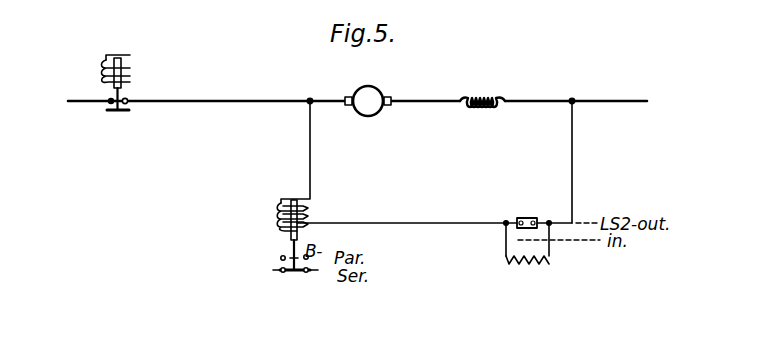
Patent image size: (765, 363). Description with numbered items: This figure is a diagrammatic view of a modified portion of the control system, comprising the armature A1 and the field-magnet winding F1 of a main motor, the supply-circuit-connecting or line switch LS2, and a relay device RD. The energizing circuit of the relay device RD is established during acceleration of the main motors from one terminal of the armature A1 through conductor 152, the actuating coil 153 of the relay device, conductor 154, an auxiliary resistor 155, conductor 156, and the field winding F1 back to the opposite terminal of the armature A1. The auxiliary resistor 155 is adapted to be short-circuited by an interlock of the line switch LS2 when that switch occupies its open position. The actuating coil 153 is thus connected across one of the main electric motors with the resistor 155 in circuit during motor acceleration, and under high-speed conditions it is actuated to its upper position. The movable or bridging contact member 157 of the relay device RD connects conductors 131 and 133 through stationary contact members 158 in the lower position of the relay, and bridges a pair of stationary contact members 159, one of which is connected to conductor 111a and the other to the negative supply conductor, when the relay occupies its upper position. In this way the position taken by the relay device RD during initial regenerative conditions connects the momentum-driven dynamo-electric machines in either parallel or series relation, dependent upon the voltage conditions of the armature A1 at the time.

The line switch LS2 is at (130, 112).
The armature A1 is at (369, 86).
The field-magnet winding F1 is at (481, 94).
The relay device RD is at (283, 201).
The conductor 152 is at (310, 138).
The actuating coil 153 is at (281, 215).
The conductor 154 is at (403, 225).
The auxiliary resistor 155 is at (528, 265).
The conductor 156 is at (572, 176).
The movable or bridging contact member 157 is at (308, 259).
The stationary contact members 158 is at (305, 273).
The stationary contact members 159 is at (290, 257).
The conductor 111a is at (280, 258).
The conductor 131 is at (272, 272).
The conductor 133 is at (319, 273).